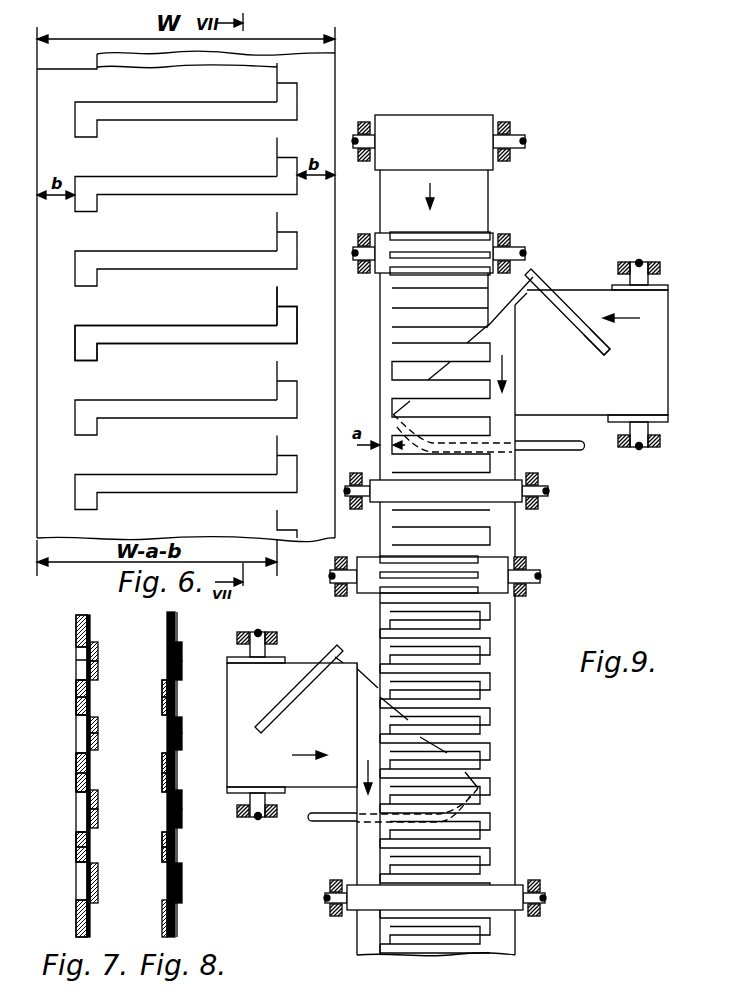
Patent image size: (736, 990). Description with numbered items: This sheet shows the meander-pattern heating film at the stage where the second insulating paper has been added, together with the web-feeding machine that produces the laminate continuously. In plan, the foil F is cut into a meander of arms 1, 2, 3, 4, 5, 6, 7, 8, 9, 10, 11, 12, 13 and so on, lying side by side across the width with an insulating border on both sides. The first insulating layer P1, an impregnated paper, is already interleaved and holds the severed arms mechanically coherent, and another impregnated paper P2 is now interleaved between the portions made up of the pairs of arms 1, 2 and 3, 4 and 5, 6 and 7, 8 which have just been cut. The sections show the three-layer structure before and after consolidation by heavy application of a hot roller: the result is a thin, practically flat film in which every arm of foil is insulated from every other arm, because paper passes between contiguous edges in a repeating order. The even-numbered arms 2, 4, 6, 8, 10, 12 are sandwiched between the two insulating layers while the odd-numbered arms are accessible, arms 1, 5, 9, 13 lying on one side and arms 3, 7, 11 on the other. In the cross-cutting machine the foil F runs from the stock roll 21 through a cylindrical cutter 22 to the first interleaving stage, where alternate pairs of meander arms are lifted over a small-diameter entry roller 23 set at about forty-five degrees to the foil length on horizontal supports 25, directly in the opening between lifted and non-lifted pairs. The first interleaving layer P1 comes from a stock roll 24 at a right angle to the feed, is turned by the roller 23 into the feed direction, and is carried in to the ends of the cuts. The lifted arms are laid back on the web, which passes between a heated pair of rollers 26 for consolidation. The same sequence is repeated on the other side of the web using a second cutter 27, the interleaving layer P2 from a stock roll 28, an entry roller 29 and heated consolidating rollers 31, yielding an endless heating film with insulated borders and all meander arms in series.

In FIG. 6, the meander arm 1 is at (186, 324).
In FIG. 7, the meander arm 1 is at (93, 875).
In FIG. 8, the meander arm 1 is at (181, 875).
In FIG. 7, the meander arm 2 is at (78, 856).
In FIG. 8, the meander arm 2 is at (167, 856).
In FIG. 7, the meander arm 3 is at (78, 840).
In FIG. 8, the meander arm 3 is at (167, 840).
In FIG. 7, the meander arm 4 is at (92, 820).
In FIG. 8, the meander arm 4 is at (181, 820).
In FIG. 6, the meander arm 5 is at (186, 249).
In FIG. 7, the meander arm 5 is at (92, 803).
In FIG. 8, the meander arm 5 is at (181, 803).
In FIG. 7, the meander arm 6 is at (78, 786).
In FIG. 8, the meander arm 6 is at (167, 786).
In FIG. 7, the meander arm 7 is at (78, 763).
In FIG. 8, the meander arm 7 is at (167, 763).
In FIG. 7, the meander arm 8 is at (92, 744).
In FIG. 8, the meander arm 8 is at (181, 744).
In FIG. 6, the meander arm 9 is at (186, 175).
In FIG. 7, the meander arm 9 is at (92, 726).
In FIG. 8, the meander arm 9 is at (181, 726).
In FIG. 7, the meander arm 10 is at (77, 708).
In FIG. 8, the meander arm 10 is at (167, 708).
In FIG. 7, the meander arm 11 is at (78, 689).
In FIG. 8, the meander arm 11 is at (167, 689).
In FIG. 7, the meander arm 12 is at (92, 670).
In FIG. 8, the meander arm 12 is at (181, 670).
In FIG. 6, the meander arm 13 is at (186, 100).
In FIG. 7, the meander arm 13 is at (92, 650).
In FIG. 8, the meander arm 13 is at (181, 650).
In FIG. 6, the first interleaving layer P1 is at (335, 388).
In FIG. 7, the first interleaving layer P1 is at (78, 641).
In FIG. 8, the first interleaving layer P1 is at (180, 893).
In FIG. 9, the first interleaving layer P1 is at (573, 405).
In FIG. 6, the second interleaving layer P2 is at (58, 75).
In FIG. 7, the second interleaving layer P2 is at (91, 772).
In FIG. 8, the second interleaving layer P2 is at (178, 625).
In FIG. 9, the second interleaving layer P2 is at (292, 783).
In FIG. 9, the foil F is at (478, 190).
In FIG. 9, the stock roll 21 is at (446, 122).
In FIG. 9, the cylindrical cutter 22 is at (488, 234).
In FIG. 9, the entry roller 23 is at (530, 280).
In FIG. 9, the stock roll 24 is at (615, 308).
In FIG. 9, the horizontal supports 25 is at (595, 352).
In FIG. 9, the heated pair of rollers 26 is at (508, 497).
In FIG. 9, the second cutter 27 is at (492, 587).
In FIG. 9, the stock roll 28 is at (285, 673).
In FIG. 9, the entry roller 29 is at (342, 666).
In FIG. 9, the heated consolidating rollers 31 is at (502, 895).